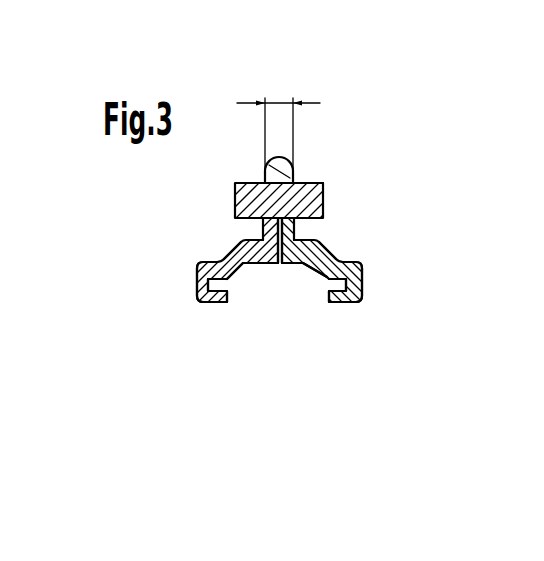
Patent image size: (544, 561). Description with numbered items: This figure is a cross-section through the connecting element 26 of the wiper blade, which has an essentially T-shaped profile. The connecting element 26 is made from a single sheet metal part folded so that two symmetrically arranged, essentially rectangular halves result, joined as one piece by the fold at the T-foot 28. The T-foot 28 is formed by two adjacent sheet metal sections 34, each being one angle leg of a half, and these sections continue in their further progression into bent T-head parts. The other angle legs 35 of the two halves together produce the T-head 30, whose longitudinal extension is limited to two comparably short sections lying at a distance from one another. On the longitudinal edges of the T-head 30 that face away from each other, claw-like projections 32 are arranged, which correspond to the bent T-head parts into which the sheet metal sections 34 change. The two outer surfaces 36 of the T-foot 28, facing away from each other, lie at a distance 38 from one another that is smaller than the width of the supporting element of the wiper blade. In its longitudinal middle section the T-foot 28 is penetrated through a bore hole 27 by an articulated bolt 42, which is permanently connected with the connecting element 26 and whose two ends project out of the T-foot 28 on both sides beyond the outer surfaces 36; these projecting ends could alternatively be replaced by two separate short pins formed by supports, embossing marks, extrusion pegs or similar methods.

The connecting element 26 is at (356, 227).
The bore hole 27 is at (290, 151).
The T-foot 28 is at (305, 169).
The T-head 30 is at (286, 284).
The claw-like projections 32 is at (192, 309).
The sheet metal sections 34 is at (278, 223).
The angle legs 35 is at (243, 268).
The outer surfaces 36 is at (243, 241).
The distance 38 is at (278, 101).
The articulated bolt 42 is at (235, 192).